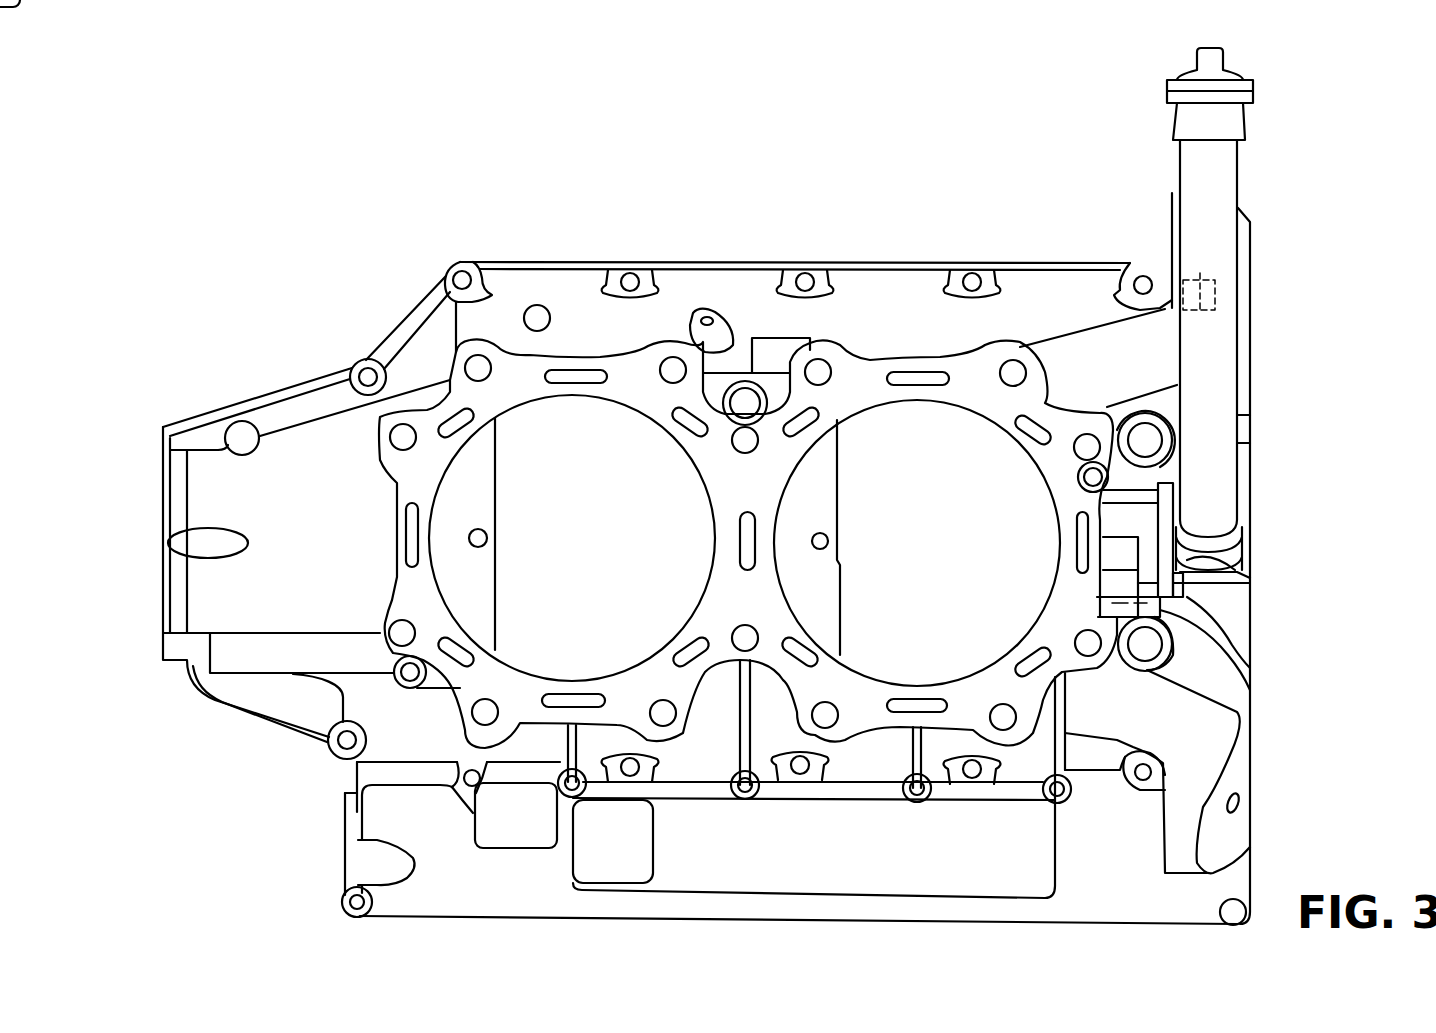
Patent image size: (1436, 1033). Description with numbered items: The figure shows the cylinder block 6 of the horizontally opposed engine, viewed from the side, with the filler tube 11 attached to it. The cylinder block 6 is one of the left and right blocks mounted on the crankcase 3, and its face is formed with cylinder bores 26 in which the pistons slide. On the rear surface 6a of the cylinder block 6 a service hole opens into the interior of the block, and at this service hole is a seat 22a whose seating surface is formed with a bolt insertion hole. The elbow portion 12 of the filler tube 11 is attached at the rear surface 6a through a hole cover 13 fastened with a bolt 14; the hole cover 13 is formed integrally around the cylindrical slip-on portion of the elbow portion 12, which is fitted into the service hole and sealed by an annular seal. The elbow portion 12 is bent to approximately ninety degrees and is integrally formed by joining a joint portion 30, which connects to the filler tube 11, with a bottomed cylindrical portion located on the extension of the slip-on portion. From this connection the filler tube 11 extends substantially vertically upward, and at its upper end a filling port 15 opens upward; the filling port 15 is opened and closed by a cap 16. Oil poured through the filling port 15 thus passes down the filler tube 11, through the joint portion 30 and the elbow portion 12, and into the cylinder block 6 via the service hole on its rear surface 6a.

The crankcase 3 is at (293, 403).
The cylinder block 6 is at (710, 268).
The rear surface 6a is at (1223, 623).
The filler tube 11 is at (1225, 236).
The elbow portion 12 is at (1250, 544).
The hole cover 13 is at (1247, 583).
The bolt 14 is at (1217, 600).
The filling port 15 is at (1246, 121).
The cap 16 is at (1255, 91).
The seat 22a is at (1150, 516).
The cylinder bore 26 is at (588, 545).
The joint portion 30 is at (1250, 544).